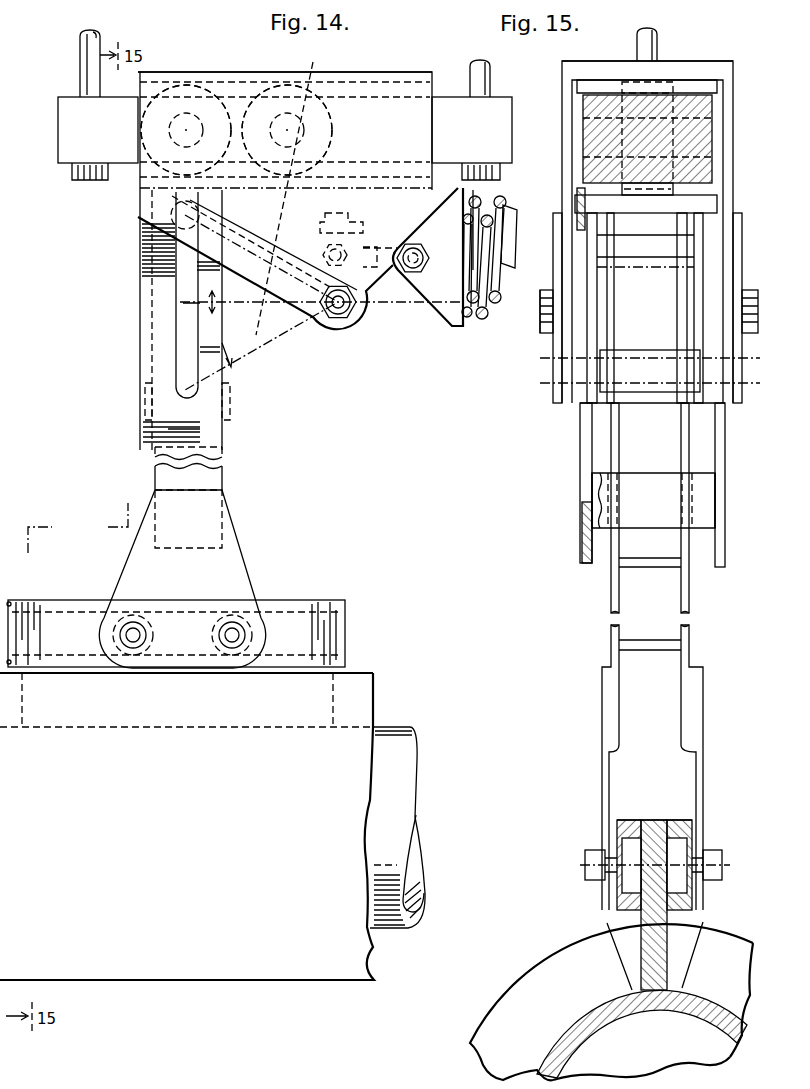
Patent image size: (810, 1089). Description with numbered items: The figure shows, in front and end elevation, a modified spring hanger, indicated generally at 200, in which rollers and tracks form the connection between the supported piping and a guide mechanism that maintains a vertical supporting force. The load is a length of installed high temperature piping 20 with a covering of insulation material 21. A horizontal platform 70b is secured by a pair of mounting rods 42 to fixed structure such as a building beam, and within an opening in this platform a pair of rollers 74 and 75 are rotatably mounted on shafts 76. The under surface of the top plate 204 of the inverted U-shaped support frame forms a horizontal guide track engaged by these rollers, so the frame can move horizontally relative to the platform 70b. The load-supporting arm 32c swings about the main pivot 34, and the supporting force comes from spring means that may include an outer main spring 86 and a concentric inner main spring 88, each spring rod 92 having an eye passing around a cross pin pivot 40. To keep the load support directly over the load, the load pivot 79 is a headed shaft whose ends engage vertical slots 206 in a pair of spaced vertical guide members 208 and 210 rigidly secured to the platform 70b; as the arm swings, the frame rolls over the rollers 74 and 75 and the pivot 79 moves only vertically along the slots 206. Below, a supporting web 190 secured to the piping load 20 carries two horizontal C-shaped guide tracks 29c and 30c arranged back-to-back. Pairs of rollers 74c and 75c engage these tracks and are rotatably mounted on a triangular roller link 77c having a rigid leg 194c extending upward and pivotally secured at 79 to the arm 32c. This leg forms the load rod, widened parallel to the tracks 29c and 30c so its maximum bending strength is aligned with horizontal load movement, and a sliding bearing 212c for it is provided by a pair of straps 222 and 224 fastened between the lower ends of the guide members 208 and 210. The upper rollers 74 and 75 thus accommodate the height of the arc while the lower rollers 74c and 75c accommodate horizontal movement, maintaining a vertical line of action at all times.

In FIG. 14, the high temperature piping 20 is at (411, 722).
In FIG. 15, the high temperature piping 20 is at (670, 1029).
In FIG. 14, the insulation material 21 is at (193, 967).
In FIG. 15, the insulation material 21 is at (532, 968).
In FIG. 14, the guide track 29c is at (294, 600).
In FIG. 15, the guide track 29c is at (618, 828).
In FIG. 15, the guide track 30c is at (692, 830).
In FIG. 14, the load-supporting arm 32c is at (253, 226).
In FIG. 15, the load-supporting arm 32c is at (600, 323).
In FIG. 14, the main pivot 34 is at (338, 315).
In FIG. 15, the main pivot 34 is at (548, 372).
In FIG. 14, the cross pin pivot 40 is at (416, 242).
In FIG. 15, the cross pin pivot 40 is at (540, 320).
In FIG. 14, the mounting rods 42 is at (78, 58).
In FIG. 15, the mounting rods 42 is at (660, 43).
In FIG. 14, the horizontal platform 70b is at (497, 118).
In FIG. 14, the roller 74 is at (204, 86).
In FIG. 15, the roller 74 is at (622, 84).
In FIG. 14, the roller 75 is at (287, 192).
In FIG. 14, the shafts 76 is at (170, 129).
In FIG. 14, the triangular roller link 77c is at (241, 554).
In FIG. 15, the triangular roller link 77c is at (605, 768).
In FIG. 14, the load pivot 79 is at (171, 214).
In FIG. 15, the load pivot 79 is at (627, 259).
In FIG. 14, the outer main spring 86 is at (470, 320).
In FIG. 14, the inner main spring 88 is at (493, 320).
In FIG. 14, the spring rod 92 is at (512, 252).
In FIG. 14, the supporting web 190 is at (333, 672).
In FIG. 15, the supporting web 190 is at (658, 933).
In FIG. 14, the rigid leg 194c is at (224, 460).
In FIG. 15, the rigid leg 194c is at (610, 620).
In FIG. 14, the assembly 200 is at (372, 61).
In FIG. 15, the assembly 200 is at (557, 155).
In FIG. 14, the top plate 204 is at (405, 72).
In FIG. 15, the top plate 204 is at (710, 63).
In FIG. 14, the vertical slots 206 is at (175, 356).
In FIG. 15, the vertical slots 206 is at (585, 495).
In FIG. 14, the vertical guide member 208 is at (140, 335).
In FIG. 15, the vertical guide member 208 is at (730, 441).
In FIG. 15, the vertical guide member 210 is at (579, 443).
In FIG. 14, the sliding bearing 212c is at (137, 410).
In FIG. 15, the sliding bearing 212c is at (653, 468).
In FIG. 14, the strap 222 is at (147, 422).
In FIG. 15, the strap 222 is at (658, 513).
In FIG. 14, the strap 224 is at (231, 402).
In FIG. 15, the strap 224 is at (595, 512).
In FIG. 14, the rollers 74c is at (147, 618).
In FIG. 15, the rollers 74c is at (680, 832).
In FIG. 14, the rollers 75c is at (213, 618).